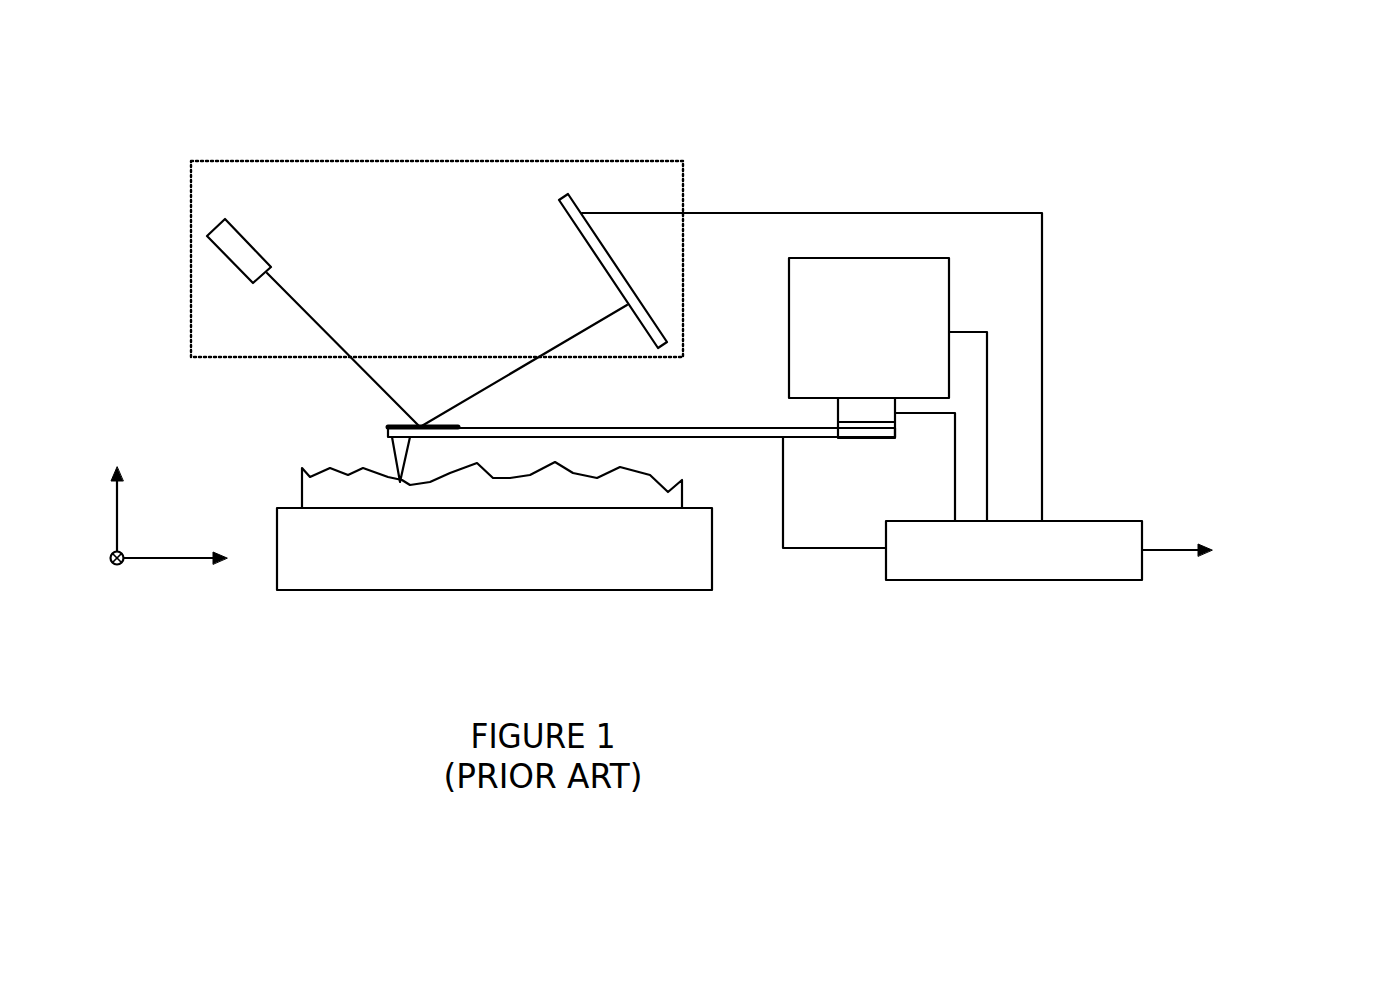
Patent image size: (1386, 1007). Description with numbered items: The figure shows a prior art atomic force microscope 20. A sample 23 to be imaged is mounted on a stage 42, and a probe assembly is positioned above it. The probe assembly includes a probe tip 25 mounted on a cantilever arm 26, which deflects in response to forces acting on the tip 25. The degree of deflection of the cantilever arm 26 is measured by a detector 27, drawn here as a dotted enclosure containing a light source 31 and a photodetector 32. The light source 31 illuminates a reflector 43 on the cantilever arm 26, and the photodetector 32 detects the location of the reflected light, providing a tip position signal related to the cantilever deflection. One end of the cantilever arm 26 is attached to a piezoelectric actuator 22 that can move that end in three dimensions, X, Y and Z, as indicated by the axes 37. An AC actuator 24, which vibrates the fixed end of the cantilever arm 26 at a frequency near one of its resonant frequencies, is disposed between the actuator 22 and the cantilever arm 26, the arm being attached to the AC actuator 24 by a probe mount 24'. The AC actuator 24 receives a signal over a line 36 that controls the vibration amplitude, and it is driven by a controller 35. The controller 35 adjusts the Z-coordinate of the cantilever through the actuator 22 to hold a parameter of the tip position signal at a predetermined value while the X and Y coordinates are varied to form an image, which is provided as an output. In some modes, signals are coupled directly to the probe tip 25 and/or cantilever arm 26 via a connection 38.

The microscope 20 is at (110, 113).
The piezoelectric actuator 22 is at (884, 387).
The sample 23 is at (303, 490).
The AC actuator 24 is at (813, 382).
The probe mount 24' is at (860, 459).
The probe tip 25 is at (400, 460).
The cantilever arm 26 is at (700, 435).
The detector 27 is at (191, 275).
The light source 31 is at (242, 243).
The photodetector 32 is at (605, 257).
The controller 35 is at (1080, 582).
The line 36 is at (955, 462).
The X, Y, Z axes 37 is at (160, 557).
The connection 38 is at (813, 552).
The stage 42 is at (340, 580).
The reflector 43 is at (421, 425).